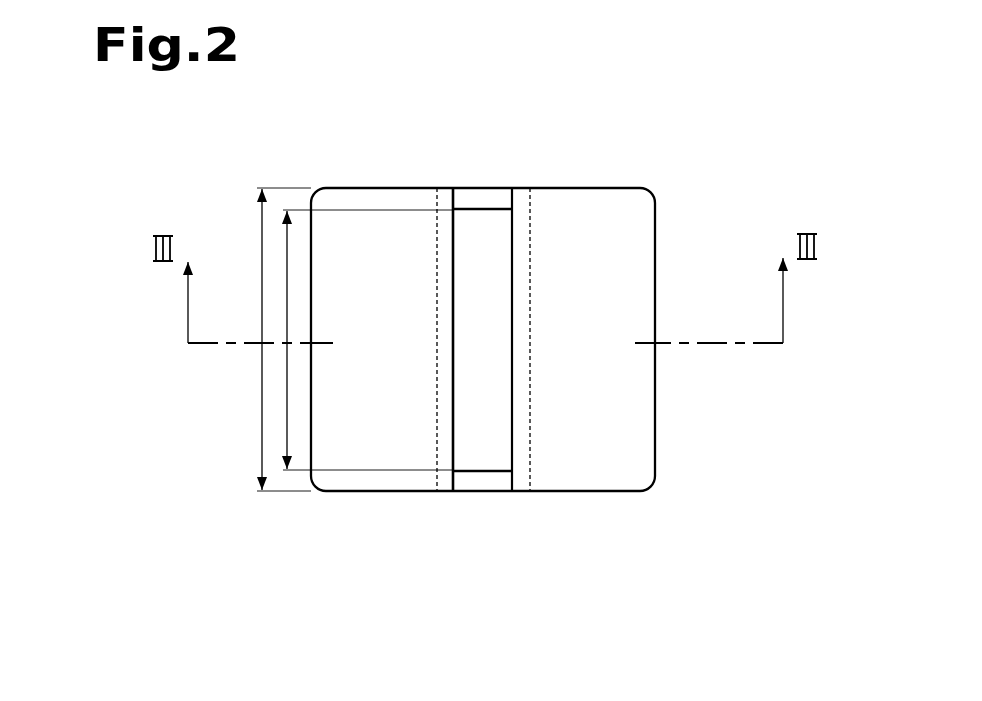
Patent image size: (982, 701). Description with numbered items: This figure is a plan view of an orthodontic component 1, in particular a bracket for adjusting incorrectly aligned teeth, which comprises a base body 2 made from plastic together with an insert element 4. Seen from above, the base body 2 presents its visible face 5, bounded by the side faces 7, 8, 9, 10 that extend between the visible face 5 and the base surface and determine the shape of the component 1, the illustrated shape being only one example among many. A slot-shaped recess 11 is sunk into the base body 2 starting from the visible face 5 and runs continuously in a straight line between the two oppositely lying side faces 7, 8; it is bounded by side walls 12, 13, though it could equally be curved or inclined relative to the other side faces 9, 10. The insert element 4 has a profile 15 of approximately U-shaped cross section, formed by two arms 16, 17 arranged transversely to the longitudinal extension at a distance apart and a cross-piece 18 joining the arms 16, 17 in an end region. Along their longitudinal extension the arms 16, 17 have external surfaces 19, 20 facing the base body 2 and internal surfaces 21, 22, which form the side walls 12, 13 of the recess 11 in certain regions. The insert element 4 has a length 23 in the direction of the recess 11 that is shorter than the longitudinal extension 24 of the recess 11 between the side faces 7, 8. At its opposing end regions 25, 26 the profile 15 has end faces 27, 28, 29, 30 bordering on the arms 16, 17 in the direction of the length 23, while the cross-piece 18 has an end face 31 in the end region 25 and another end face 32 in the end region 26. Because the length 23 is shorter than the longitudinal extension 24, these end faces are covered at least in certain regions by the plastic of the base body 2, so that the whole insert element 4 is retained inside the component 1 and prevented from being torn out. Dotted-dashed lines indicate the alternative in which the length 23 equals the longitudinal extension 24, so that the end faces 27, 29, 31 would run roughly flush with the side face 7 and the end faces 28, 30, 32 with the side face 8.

The orthodontic component 1 is at (675, 138).
The base body 2 is at (632, 440).
The insert element 4 is at (492, 240).
The visible face 5 is at (359, 248).
The side face 7 is at (612, 492).
The side face 8 is at (338, 187).
The side face 9 is at (657, 392).
The side face 10 is at (312, 423).
The slot-shaped recess 11 is at (478, 208).
The side wall 12 is at (512, 205).
The side wall 13 is at (453, 415).
The profile 15 is at (490, 405).
The arm 16 is at (523, 305).
The arm 17 is at (445, 374).
The cross-piece 18 is at (472, 333).
The external surface 19 is at (531, 249).
The external surface 20 is at (437, 289).
The internal surface 21 is at (513, 343).
The internal surface 22 is at (454, 216).
The length 23 is at (287, 367).
The longitudinal extension 24 is at (262, 225).
The end region 25 is at (490, 480).
The end region 26 is at (470, 238).
The end face 27 is at (525, 472).
The end face 28 is at (530, 207).
The end face 29 is at (439, 472).
The end face 30 is at (438, 207).
The end face 31 is at (473, 472).
The end face 32 is at (490, 207).